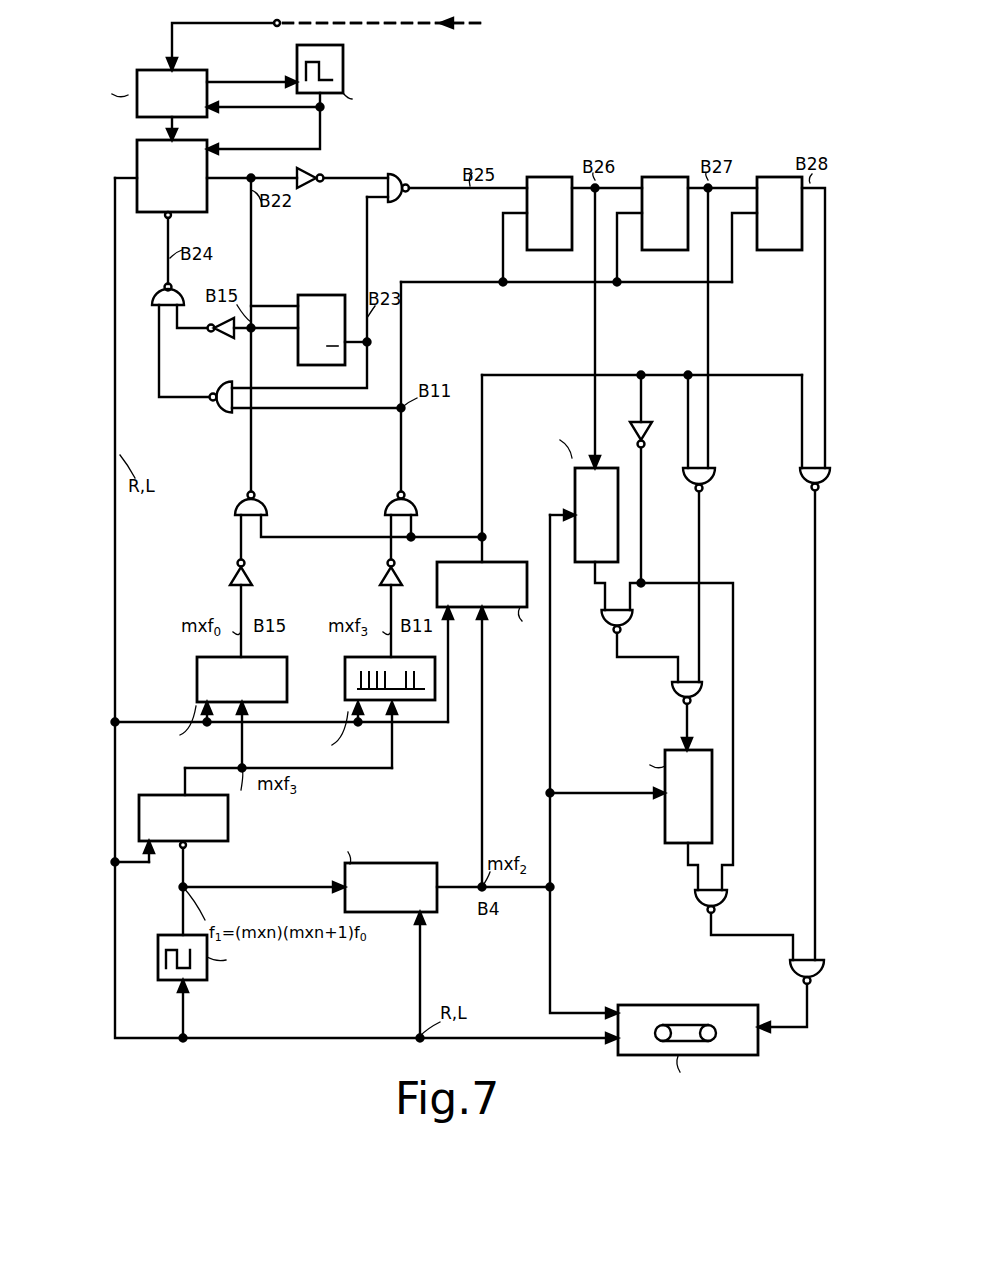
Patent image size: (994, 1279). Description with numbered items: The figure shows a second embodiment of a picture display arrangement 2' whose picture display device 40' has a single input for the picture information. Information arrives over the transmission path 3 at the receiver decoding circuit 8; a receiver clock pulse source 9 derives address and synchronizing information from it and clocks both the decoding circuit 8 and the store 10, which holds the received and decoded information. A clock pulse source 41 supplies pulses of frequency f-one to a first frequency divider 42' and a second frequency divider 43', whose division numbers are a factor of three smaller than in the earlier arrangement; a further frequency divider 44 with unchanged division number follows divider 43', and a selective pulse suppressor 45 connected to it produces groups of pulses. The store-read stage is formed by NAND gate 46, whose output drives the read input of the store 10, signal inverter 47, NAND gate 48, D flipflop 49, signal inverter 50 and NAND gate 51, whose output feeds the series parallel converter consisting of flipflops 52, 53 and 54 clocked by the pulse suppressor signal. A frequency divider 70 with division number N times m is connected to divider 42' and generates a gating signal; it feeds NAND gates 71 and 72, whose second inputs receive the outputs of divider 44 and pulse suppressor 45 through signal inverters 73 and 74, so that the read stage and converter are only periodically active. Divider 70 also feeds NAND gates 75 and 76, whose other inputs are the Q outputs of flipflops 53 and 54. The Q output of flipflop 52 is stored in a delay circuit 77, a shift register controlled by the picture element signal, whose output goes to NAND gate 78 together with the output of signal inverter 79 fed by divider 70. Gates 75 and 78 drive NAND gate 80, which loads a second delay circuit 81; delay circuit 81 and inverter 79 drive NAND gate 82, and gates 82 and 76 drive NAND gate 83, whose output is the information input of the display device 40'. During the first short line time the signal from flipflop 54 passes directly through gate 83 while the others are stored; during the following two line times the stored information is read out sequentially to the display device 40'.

The receiver decoding circuit 8 is at (199, 72).
The receiver clock pulse source 9 is at (343, 76).
The store 10 is at (207, 143).
The transmission path 3 is at (430, 29).
The picture display arrangement 2' is at (449, 134).
The NAND gate 46 is at (156, 292).
The signal inverter 47 is at (223, 339).
The NAND gate 48 is at (223, 412).
The D flipflop 49 is at (320, 295).
The signal inverter 50 is at (318, 192).
The NAND gate 51 is at (401, 205).
The flipflop 52 is at (551, 250).
The flipflop 53 is at (666, 250).
The flipflop 54 is at (780, 250).
The frequency divider 70 is at (501, 562).
The NAND gate 71 is at (263, 508).
The NAND gate 72 is at (413, 508).
The signal inverter 73 is at (229, 577).
The signal inverter 74 is at (379, 577).
The NAND gate 75 is at (708, 497).
The NAND gate 76 is at (804, 489).
The delay circuit 77 is at (574, 486).
The NAND gate 78 is at (606, 630).
The signal inverter 79 is at (631, 423).
The NAND gate 80 is at (673, 690).
The delay circuit 81 is at (665, 829).
The NAND gate 82 is at (697, 905).
The NAND gate 83 is at (791, 975).
The frequency divider 44 is at (196, 689).
The selective pulse suppressor 45 is at (346, 697).
The frequency divider 43' is at (204, 818).
The frequency divider 42' is at (371, 871).
The clock pulse source 41 is at (207, 972).
The picture display device 40' is at (688, 1041).